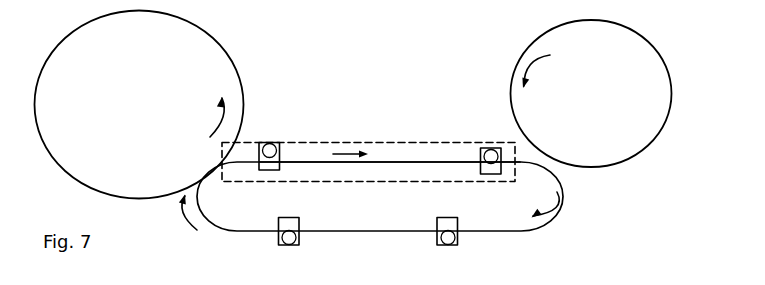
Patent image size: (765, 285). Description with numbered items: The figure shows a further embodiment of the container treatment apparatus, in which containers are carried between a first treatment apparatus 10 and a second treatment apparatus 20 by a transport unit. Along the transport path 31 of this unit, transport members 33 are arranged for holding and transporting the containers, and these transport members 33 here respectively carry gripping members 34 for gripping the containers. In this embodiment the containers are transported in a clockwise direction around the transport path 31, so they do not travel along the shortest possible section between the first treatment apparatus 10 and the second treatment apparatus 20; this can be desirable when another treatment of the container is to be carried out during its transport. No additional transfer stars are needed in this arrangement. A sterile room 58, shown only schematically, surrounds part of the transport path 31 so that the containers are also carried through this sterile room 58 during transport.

The first treatment apparatus 10 is at (628, 138).
The second treatment apparatus 20 is at (187, 50).
The transport path 31 is at (390, 163).
The transport members 33 is at (281, 160).
The gripping members 34 is at (277, 147).
The sterile room 58 is at (495, 183).